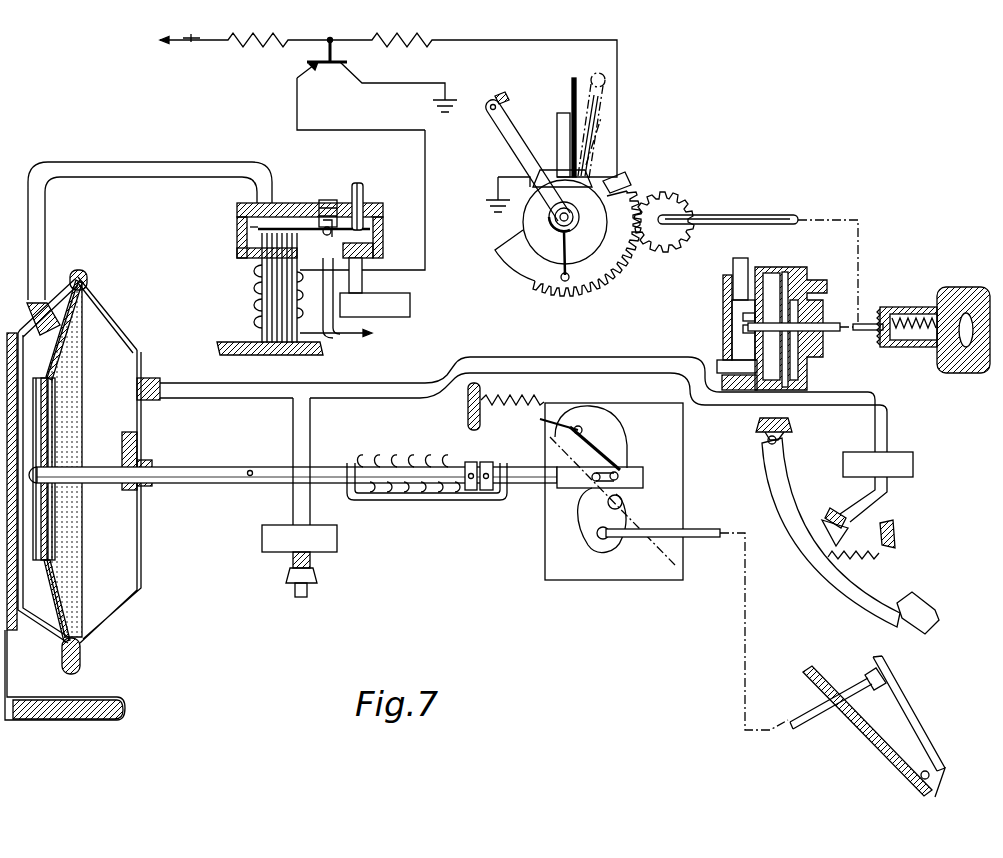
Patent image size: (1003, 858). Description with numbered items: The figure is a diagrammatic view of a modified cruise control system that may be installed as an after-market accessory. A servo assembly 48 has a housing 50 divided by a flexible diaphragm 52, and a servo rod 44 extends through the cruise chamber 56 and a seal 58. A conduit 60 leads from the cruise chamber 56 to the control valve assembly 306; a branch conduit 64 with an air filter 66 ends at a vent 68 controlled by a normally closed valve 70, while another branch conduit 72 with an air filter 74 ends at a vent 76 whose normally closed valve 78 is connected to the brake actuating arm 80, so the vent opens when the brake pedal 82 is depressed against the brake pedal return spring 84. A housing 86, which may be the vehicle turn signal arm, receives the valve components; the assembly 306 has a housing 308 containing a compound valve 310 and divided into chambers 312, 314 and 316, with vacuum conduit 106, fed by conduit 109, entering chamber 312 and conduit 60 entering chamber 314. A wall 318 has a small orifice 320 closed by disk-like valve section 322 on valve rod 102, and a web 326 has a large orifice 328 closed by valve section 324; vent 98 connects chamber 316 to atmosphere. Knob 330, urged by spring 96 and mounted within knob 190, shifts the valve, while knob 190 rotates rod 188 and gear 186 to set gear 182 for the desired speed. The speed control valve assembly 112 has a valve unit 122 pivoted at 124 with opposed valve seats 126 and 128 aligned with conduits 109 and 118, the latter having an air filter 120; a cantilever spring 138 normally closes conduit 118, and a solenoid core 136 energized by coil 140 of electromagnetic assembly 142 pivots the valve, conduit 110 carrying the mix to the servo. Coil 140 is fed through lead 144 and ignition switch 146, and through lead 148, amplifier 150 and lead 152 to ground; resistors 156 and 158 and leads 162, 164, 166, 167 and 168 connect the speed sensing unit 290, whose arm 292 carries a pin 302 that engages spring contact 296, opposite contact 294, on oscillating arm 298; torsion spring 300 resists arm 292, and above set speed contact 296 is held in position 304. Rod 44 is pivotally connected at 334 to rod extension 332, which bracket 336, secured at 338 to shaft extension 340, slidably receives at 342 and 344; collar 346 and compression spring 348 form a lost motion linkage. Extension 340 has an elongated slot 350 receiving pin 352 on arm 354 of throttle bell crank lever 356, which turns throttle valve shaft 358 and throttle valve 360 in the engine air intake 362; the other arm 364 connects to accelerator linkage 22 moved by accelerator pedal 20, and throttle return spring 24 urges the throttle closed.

The accelerator pedal 20 is at (890, 700).
The accelerator linkage 22 is at (700, 540).
The throttle return spring 24 is at (545, 409).
The servo rod 44 is at (190, 482).
The servo assembly 48 is at (88, 303).
The housing 50 is at (137, 561).
The flexible diaphragm 52 is at (70, 357).
The cruise chamber 56 is at (108, 330).
The seal 58 is at (143, 488).
The conduit 60 is at (242, 396).
The branch conduit 64 is at (290, 562).
The air filter 66 is at (337, 539).
The vent 68 is at (316, 580).
The normally closed valve 70 is at (308, 586).
The branch conduit 72 is at (720, 407).
The air filter 74 is at (910, 454).
The vent 76 is at (830, 509).
The normally closed valve 78 is at (824, 518).
The brake actuating arm 80 is at (864, 603).
The brake pedal 82 is at (918, 612).
The brake pedal return spring 84 is at (853, 548).
The housing 86 is at (830, 336).
The spring 96 is at (905, 350).
The vent 98 is at (818, 282).
The valve rod 102 is at (850, 325).
The vacuum conduit 106 is at (733, 264).
The conduit 109 is at (363, 194).
The conduit 110 is at (153, 172).
The speed control valve assembly 112 is at (237, 240).
The atmospheric air supply conduit 118 is at (365, 283).
The air filter 120 is at (411, 307).
The valve unit 122 is at (270, 227).
The pivot 124 is at (330, 220).
The valve seat 126 is at (378, 226).
The valve seat 128 is at (378, 236).
The solenoid core 136 is at (255, 288).
The spring 138 is at (329, 210).
The solenoid coil 140 is at (254, 304).
The electromagnetic assembly 142 is at (252, 326).
The lead 144 is at (310, 336).
The ignition switch 146 is at (192, 45).
The electrical lead 148 is at (423, 157).
The amplifier 150 is at (327, 72).
The lead 152 is at (370, 85).
The resistor 156 is at (258, 44).
The resistor 158 is at (406, 43).
The lead 162 is at (618, 95).
The lead 164 is at (335, 54).
The lead 166 is at (310, 39).
The lead 167 is at (222, 38).
The lead 168 is at (498, 188).
The gear 182 is at (596, 280).
The gear 186 is at (678, 208).
The rod 188 is at (775, 214).
The knob 190 is at (971, 288).
The speed sensing unit 290 is at (618, 200).
The arm 292 is at (598, 144).
The contact 294 is at (557, 110).
The contact 296 is at (572, 89).
The oscillating arm 298 is at (564, 151).
The torsion spring 300 is at (530, 226).
The pin 302 is at (604, 84).
The position 304 is at (603, 128).
The control valve assembly 306 is at (723, 290).
The housing 308 is at (780, 258).
The compound valve 310 is at (792, 378).
The chamber 312 is at (740, 342).
The chamber 314 is at (758, 268).
The chamber 316 is at (788, 270).
The wall 318 is at (745, 308).
The orifice 320 is at (745, 328).
The valve section 322 is at (742, 320).
The valve section 324 is at (795, 348).
The web 326 is at (767, 402).
The orifice 328 is at (787, 400).
The knob 330 is at (974, 368).
The rod extension 332 is at (273, 484).
The pivotal connection 334 is at (250, 470).
The bracket 336 is at (370, 497).
The securing point 338 is at (492, 450).
The slide bar 340 is at (533, 465).
The sliding connection 342 is at (508, 500).
The bracket end 344 is at (350, 462).
The collar 346 is at (469, 462).
The compression spring 348 is at (411, 457).
The elongated slot 350 is at (598, 442).
The pin 352 is at (618, 470).
The arm 354 is at (642, 427).
The throttle bell crank lever 356 is at (642, 493).
The throttle valve shaft 358 is at (606, 505).
The throttle valve 360 is at (667, 568).
The engine air intake 362 is at (545, 557).
The other arm 364 is at (597, 560).